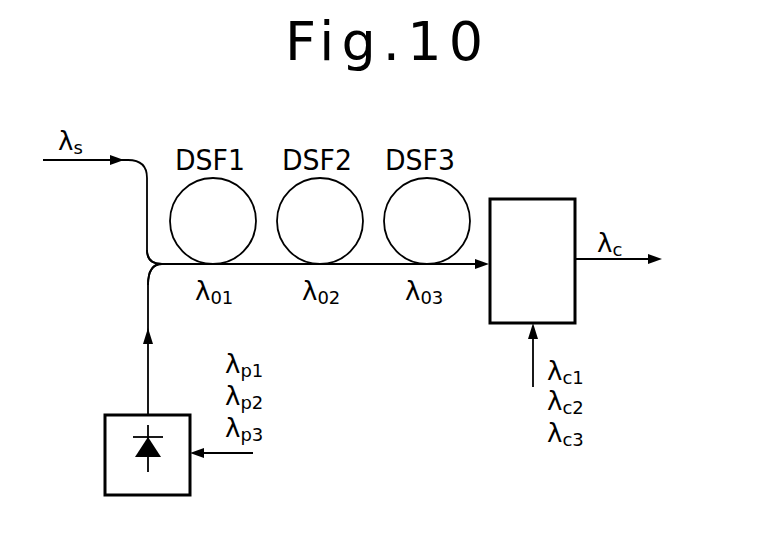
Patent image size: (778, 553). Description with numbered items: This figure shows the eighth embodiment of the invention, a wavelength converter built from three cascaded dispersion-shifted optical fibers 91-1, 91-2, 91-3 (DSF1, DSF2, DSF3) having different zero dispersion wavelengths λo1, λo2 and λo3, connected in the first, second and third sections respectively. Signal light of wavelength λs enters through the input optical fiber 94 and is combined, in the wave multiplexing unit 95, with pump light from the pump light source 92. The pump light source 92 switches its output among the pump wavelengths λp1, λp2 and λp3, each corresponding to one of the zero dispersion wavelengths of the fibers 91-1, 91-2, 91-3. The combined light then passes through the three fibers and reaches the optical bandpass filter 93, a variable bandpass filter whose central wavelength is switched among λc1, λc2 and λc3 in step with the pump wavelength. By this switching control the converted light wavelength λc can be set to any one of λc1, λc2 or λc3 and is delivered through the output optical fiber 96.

The dispersion-shifted optical fiber 91-1 is at (247, 242).
The dispersion-shifted optical fiber 91-2 is at (354, 242).
The dispersion-shifted optical fiber 91-3 is at (461, 242).
The pump light source 92 is at (159, 497).
The optical bandpass filter 93 is at (557, 199).
The input optical fiber 94 is at (76, 163).
The wave multiplexing unit 95 is at (150, 264).
The output optical fiber 96 is at (593, 262).